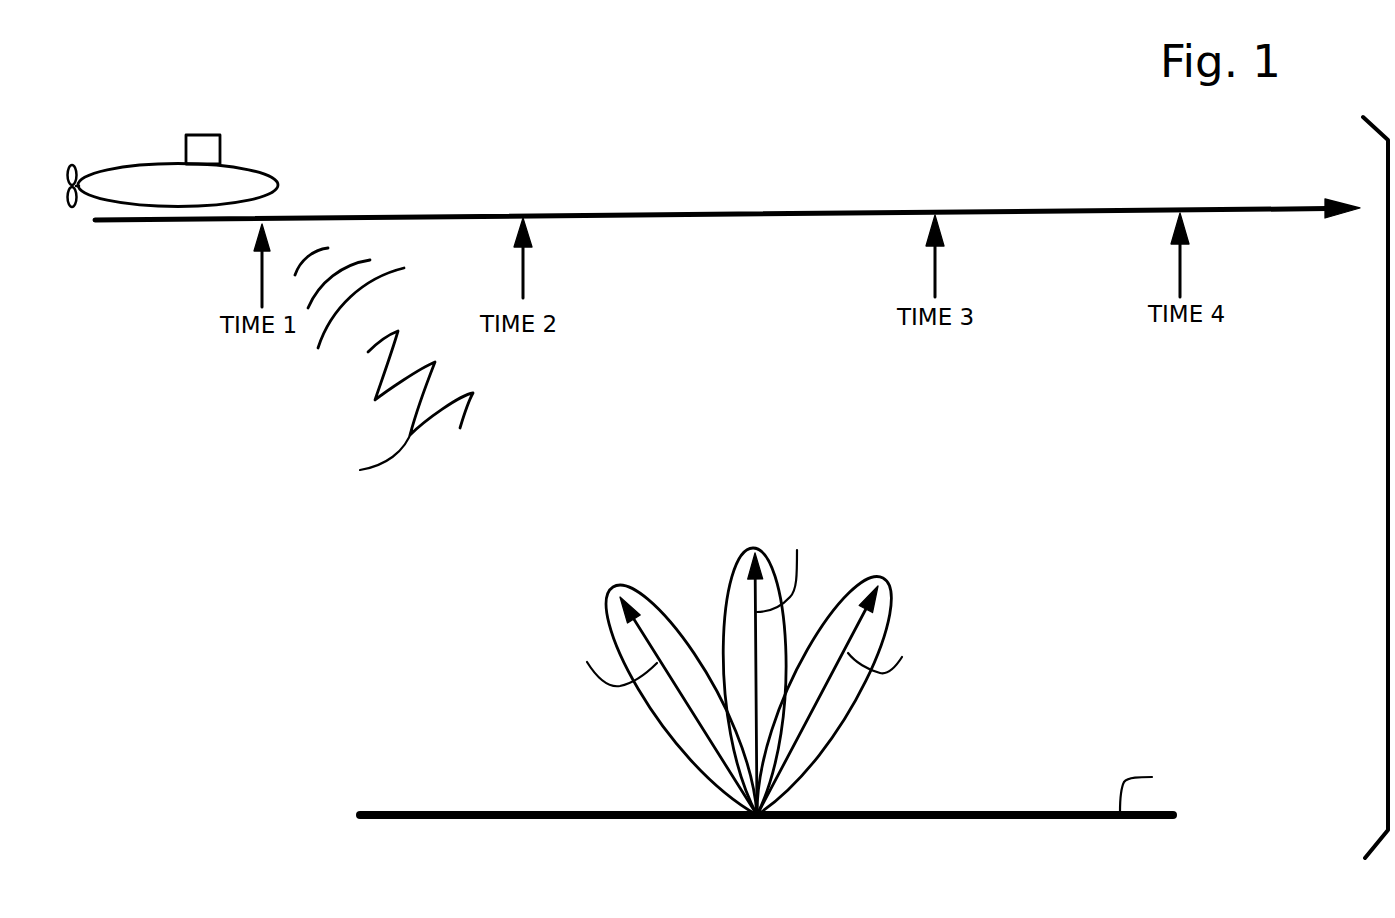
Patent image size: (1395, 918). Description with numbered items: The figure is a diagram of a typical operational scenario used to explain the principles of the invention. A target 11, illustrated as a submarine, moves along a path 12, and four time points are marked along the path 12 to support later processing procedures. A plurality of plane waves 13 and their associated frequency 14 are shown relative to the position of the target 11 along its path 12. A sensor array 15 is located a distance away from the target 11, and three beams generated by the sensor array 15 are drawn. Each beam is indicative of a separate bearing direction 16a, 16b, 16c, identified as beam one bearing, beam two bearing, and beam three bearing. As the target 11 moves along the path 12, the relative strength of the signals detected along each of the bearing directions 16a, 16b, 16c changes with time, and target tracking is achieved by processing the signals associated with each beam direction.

The target 11 is at (278, 180).
The path 12 is at (733, 215).
The plane waves 13 is at (393, 290).
The frequency 14 is at (370, 398).
The sensor array 15 is at (1001, 812).
The bearing direction 16a is at (690, 720).
The bearing direction 16b is at (752, 635).
The bearing direction 16c is at (827, 685).